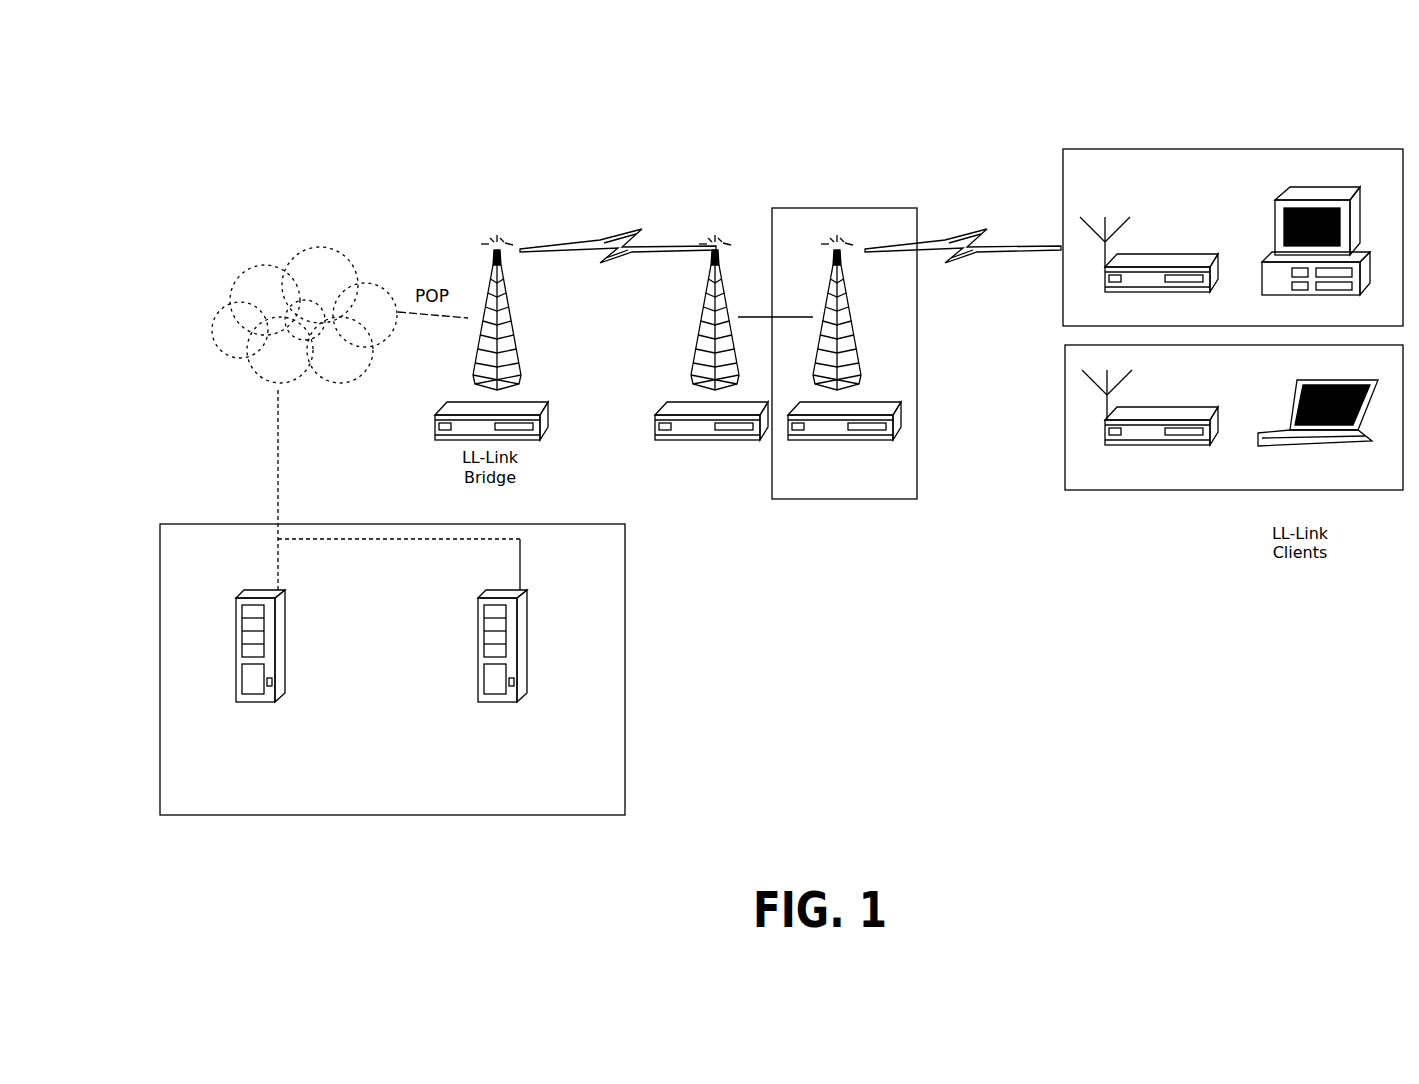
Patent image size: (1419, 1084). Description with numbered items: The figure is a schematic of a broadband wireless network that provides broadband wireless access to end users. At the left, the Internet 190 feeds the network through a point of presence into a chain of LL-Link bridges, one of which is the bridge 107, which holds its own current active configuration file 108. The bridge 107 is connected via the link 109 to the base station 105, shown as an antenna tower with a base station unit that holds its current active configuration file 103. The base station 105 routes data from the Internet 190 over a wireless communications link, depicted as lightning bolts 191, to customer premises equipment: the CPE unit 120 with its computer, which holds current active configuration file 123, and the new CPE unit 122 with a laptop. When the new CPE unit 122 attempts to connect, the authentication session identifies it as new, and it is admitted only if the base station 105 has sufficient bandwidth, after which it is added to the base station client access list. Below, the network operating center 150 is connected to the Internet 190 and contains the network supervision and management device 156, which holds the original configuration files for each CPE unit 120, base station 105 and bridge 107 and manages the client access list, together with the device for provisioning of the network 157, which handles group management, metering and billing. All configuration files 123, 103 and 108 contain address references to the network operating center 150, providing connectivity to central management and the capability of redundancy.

The Internet 190 is at (297, 290).
The link 109 is at (772, 317).
The wireless link 191 is at (933, 223).
The customer premises equipment unit 120 is at (1110, 149).
The current active configuration file 123 is at (1160, 237).
The current active configuration file 103 is at (896, 415).
The current active configuration file 108 is at (697, 418).
The bridge 107 is at (745, 443).
The base station 105 is at (886, 500).
The new CPE unit 122 is at (1150, 492).
The network operating center 150 is at (392, 701).
The network supervision and management device 156 is at (285, 600).
The device for provisioning of the network 157 is at (522, 597).